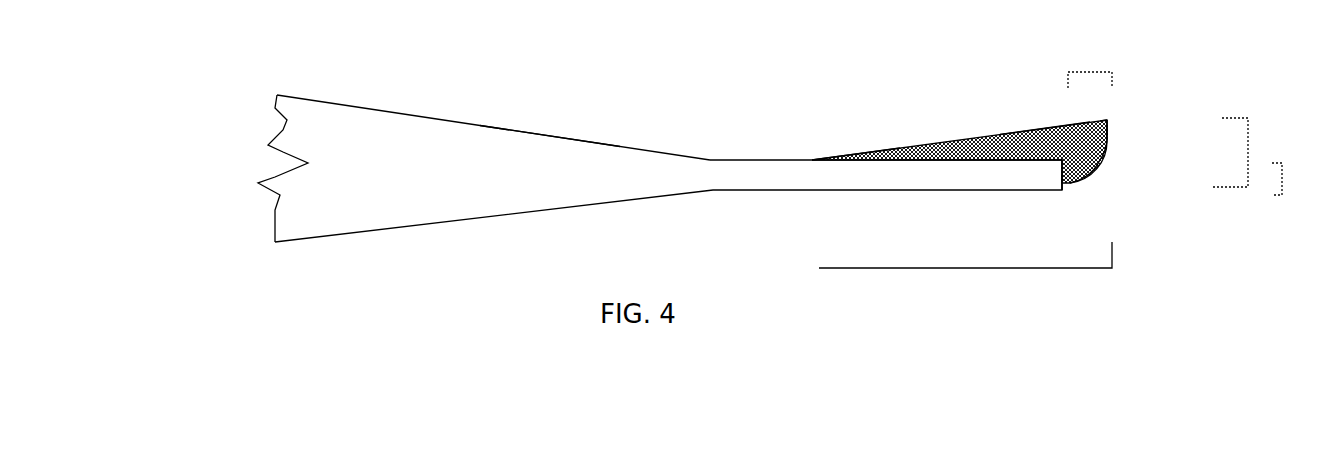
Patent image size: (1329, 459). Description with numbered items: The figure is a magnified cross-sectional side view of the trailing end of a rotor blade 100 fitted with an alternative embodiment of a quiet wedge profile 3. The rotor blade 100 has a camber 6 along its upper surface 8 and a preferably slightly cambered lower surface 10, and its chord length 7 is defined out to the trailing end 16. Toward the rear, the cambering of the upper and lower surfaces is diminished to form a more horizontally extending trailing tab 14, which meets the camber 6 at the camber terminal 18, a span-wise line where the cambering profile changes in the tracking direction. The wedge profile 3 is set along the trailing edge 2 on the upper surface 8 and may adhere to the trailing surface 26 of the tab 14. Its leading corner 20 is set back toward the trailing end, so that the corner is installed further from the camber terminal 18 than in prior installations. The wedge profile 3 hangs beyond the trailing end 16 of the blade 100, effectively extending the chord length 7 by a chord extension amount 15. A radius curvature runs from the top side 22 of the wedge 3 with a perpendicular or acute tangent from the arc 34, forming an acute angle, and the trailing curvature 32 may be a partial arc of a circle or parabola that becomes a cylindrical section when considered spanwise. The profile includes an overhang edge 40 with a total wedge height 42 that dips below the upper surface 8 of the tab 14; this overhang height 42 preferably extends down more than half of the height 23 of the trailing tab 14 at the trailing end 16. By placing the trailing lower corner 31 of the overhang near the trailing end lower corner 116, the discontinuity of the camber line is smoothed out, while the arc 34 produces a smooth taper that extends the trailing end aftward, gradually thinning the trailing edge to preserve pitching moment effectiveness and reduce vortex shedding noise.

The rotor blade 100 is at (284, 79).
The camber 6 is at (435, 118).
The upper surface 8 is at (542, 134).
The lower surface 10 is at (436, 226).
The camber terminal 18 is at (713, 160).
The leading corner 20 is at (813, 160).
The wedge profile 3 is at (1049, 126).
The chord extension amount 15 is at (1086, 73).
The top side 22 is at (1075, 122).
The overhang edge 40 is at (1113, 112).
The arc 34 is at (1120, 123).
The trailing edge 2 is at (1110, 128).
The trailing curvature 32 is at (1103, 153).
The trailing lower corner 31 is at (1067, 183).
The trailing end 16 is at (1067, 183).
The trailing end lower corner 116 is at (1063, 192).
The trailing tab 14 is at (1063, 192).
The trailing surface 26 is at (1066, 172).
The chord length 7 is at (1098, 239).
The wedge height 42 is at (1246, 152).
The height 23 is at (1291, 179).